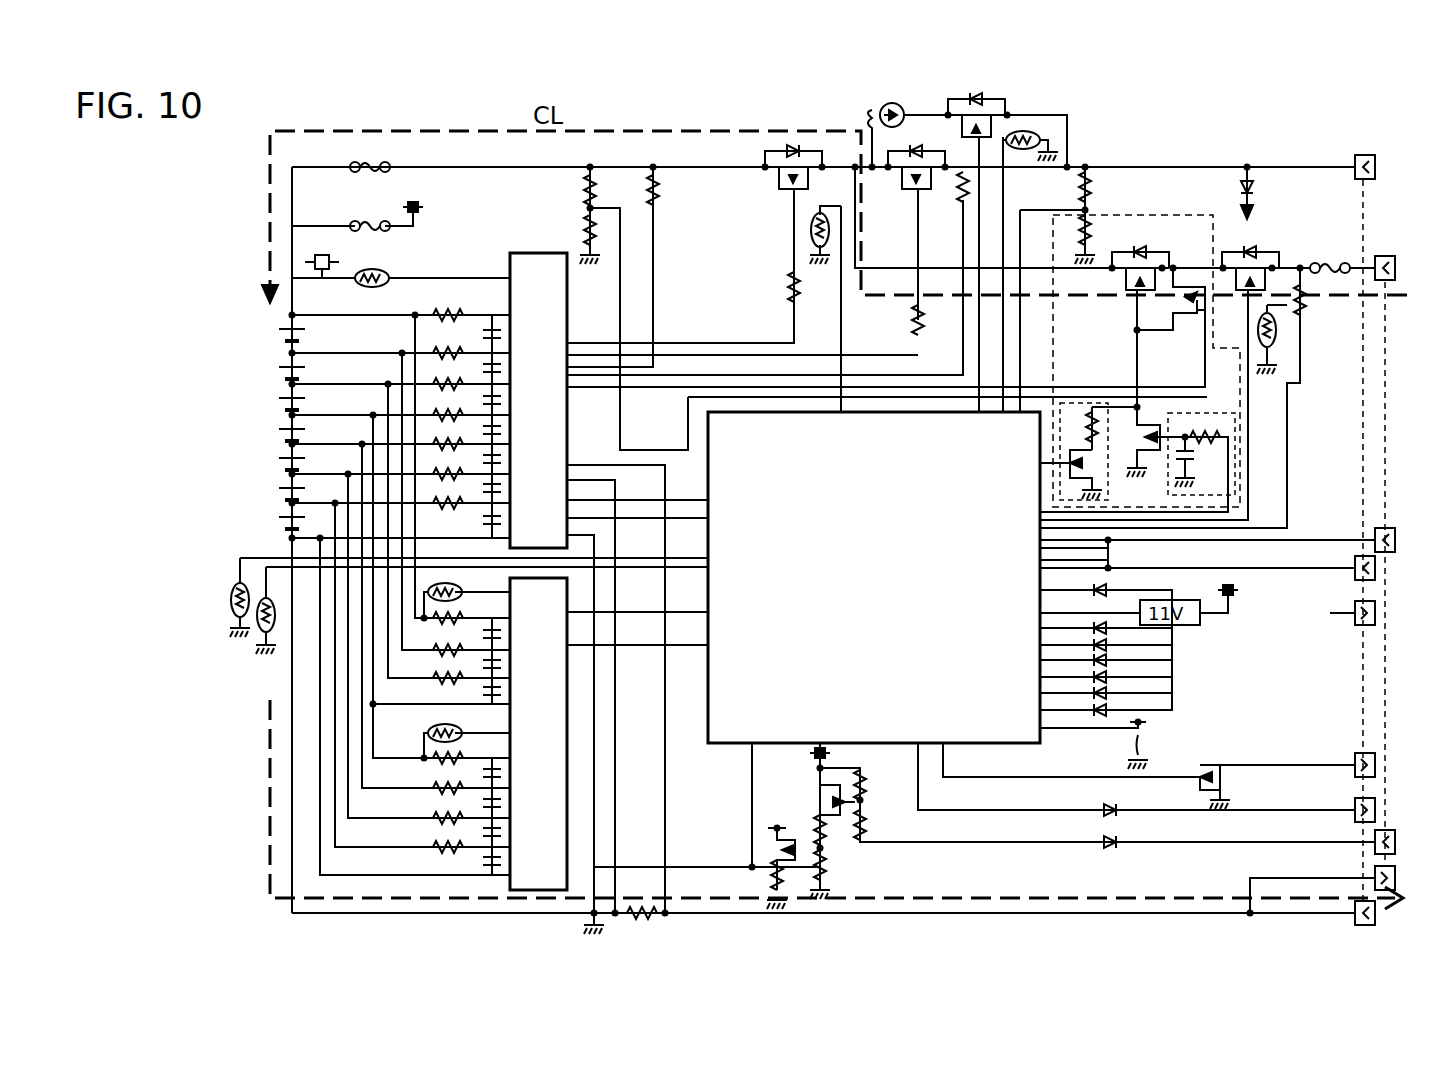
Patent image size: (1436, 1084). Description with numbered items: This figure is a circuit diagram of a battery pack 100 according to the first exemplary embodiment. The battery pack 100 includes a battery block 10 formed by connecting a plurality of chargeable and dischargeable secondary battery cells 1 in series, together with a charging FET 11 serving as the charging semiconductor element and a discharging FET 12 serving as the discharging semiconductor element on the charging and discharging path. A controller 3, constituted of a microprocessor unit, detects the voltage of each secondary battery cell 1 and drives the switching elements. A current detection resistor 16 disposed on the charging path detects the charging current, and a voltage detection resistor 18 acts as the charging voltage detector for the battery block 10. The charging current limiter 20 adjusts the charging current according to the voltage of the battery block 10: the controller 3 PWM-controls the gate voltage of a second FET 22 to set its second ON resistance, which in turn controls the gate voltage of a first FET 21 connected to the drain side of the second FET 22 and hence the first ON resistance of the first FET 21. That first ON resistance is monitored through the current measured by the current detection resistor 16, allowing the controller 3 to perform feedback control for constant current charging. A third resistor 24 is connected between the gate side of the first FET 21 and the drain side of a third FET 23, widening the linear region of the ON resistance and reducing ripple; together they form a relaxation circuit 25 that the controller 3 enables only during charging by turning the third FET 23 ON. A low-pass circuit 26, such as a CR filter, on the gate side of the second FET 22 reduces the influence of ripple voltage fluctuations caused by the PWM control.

The battery pack 100 is at (1262, 148).
The battery block 10 is at (258, 611).
The secondary battery cell 1 is at (272, 398).
The controller 3 is at (734, 744).
The charging FET 11 is at (775, 147).
The discharging FET 12 is at (916, 145).
The current detection resistor 16 is at (636, 904).
The voltage detection resistor 18 is at (570, 203).
The charging current limiter 20 is at (1188, 314).
The first FET 21 is at (1132, 245).
The second FET 22 is at (1152, 425).
The third FET 23 is at (1098, 472).
The third resistor 24 is at (1090, 409).
The relaxation circuit 25 is at (1113, 382).
The low-pass circuit 26 is at (1238, 465).